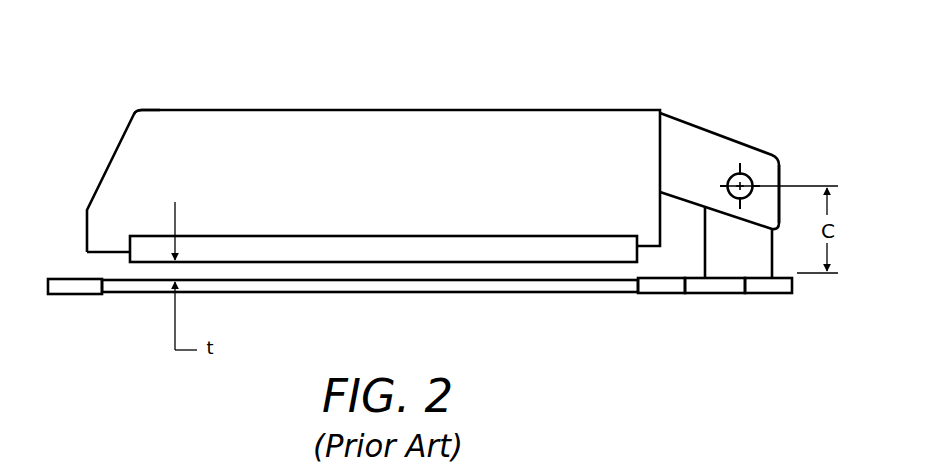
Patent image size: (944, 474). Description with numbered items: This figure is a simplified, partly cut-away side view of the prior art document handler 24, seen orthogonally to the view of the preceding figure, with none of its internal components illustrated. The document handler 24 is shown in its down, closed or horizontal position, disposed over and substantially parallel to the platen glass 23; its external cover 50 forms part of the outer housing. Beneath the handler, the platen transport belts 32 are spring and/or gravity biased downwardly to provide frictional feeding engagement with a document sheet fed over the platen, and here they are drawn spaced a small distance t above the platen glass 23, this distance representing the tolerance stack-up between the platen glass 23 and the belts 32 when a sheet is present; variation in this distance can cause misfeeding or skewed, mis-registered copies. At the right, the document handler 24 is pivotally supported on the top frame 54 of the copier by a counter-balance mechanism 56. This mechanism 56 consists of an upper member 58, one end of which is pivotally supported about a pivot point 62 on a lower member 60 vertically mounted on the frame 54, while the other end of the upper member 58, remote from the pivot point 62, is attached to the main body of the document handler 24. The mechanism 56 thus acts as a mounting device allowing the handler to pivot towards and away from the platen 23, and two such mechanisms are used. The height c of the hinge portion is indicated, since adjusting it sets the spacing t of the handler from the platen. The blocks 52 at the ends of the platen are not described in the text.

The document handler 24 is at (544, 90).
The external cover 50 is at (135, 117).
The platen transport belts 32 is at (402, 235).
The upper member 58 is at (697, 127).
The counter-balance mechanism 56 is at (816, 157).
The pivot point 62 is at (749, 172).
The top frame 54 is at (718, 294).
The lower member 60 is at (750, 262).
The spacer blocks 52 is at (82, 297).
The platen glass 23 is at (288, 294).